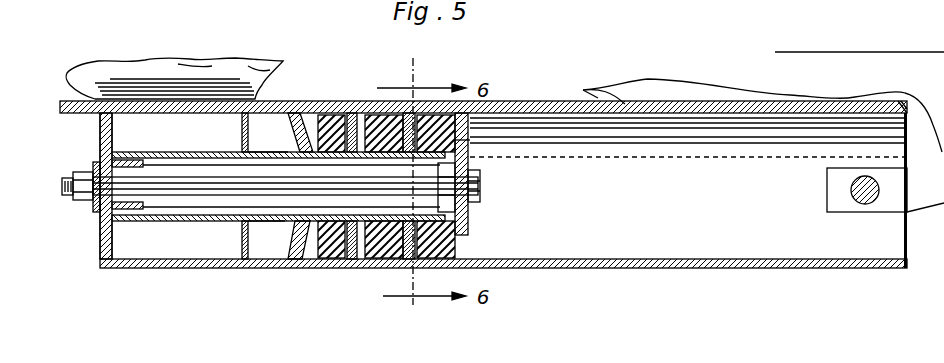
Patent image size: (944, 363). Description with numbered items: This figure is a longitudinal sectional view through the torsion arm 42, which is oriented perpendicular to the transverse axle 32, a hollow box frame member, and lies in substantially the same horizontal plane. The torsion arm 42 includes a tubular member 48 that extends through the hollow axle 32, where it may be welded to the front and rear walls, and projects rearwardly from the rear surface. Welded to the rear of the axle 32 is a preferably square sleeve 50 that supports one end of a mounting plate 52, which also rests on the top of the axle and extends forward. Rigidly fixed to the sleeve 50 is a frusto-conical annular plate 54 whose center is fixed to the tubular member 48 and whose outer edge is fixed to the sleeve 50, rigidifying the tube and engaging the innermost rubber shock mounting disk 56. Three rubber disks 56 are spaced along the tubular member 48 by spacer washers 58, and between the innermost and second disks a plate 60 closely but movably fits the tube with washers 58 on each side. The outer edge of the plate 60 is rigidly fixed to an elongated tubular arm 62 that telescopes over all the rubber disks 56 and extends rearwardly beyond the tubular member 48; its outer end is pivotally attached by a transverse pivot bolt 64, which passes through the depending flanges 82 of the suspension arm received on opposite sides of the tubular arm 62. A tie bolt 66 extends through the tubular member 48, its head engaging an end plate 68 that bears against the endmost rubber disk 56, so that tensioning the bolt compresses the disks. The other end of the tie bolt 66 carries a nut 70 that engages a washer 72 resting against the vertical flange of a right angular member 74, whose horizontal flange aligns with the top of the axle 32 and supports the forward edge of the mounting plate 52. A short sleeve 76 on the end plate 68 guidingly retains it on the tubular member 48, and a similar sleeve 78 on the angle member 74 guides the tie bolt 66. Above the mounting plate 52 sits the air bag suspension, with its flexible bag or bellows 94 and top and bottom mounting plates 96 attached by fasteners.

The transverse axle 32 is at (168, 268).
The torsion arm 42 is at (512, 104).
The tubular member 48 is at (162, 222).
The sleeve 50 is at (264, 262).
The mounting plate 52 is at (272, 104).
The annular plate 54 is at (300, 262).
The rubber shock mounting disk 56 is at (326, 113).
The spacer washer 58 is at (468, 231).
The plate 60 is at (354, 263).
The tubular arm 62 is at (590, 268).
The pivot bolt 64 is at (851, 188).
The tie bolt 66 is at (480, 184).
The end plate 68 is at (470, 141).
The nut 70 is at (73, 200).
The washer 72 is at (94, 212).
The right angular member 74 is at (100, 131).
The sleeve 76 is at (470, 166).
The sleeve 78 is at (146, 161).
The depending flange 82 is at (620, 102).
The flexible bag 94 is at (191, 72).
The mounting plate 96 is at (96, 92).